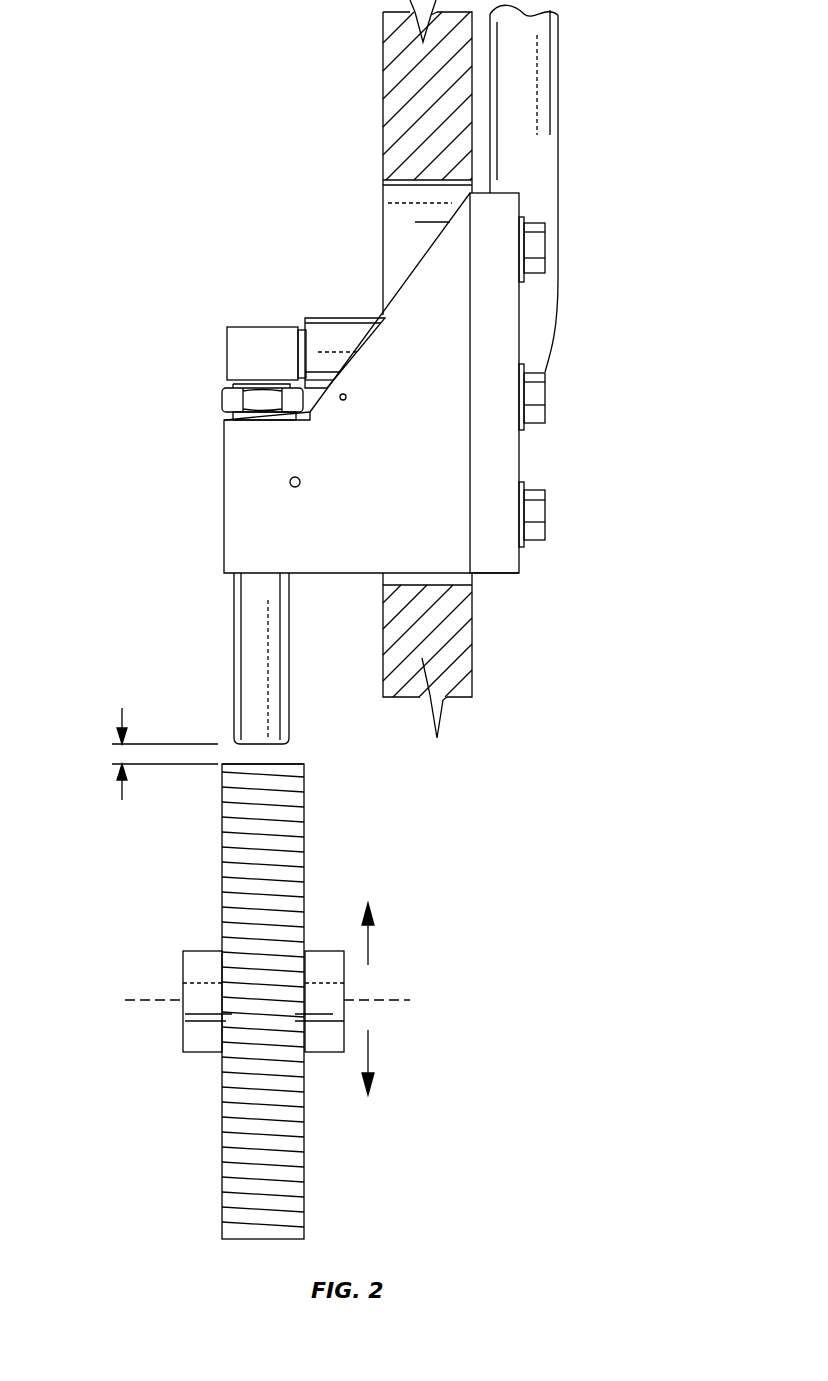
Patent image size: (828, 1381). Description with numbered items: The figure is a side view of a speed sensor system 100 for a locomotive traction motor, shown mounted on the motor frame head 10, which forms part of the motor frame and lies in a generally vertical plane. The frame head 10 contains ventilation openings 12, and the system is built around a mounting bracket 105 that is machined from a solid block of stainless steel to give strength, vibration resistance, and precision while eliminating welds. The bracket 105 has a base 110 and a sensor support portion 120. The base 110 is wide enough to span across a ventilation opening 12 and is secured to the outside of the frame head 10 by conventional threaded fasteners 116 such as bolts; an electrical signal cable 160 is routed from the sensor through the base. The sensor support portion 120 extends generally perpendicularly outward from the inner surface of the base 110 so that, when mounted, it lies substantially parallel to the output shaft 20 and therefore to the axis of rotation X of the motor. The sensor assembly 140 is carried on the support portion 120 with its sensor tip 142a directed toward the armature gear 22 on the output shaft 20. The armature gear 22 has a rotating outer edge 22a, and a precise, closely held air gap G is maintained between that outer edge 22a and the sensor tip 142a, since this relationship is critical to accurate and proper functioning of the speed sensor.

The speed sensor system 100 is at (200, 172).
The motor frame head 10 is at (405, 92).
The ventilation opening 12 is at (405, 222).
The electrical signal cable 160 is at (527, 100).
The base 110 is at (490, 553).
The threaded fasteners 116 is at (541, 490).
The sensor assembly 140 is at (215, 349).
The mounting bracket 105 is at (305, 569).
The sensor support portion 120 is at (327, 548).
The sensor tip 142a is at (240, 742).
The air gap G is at (165, 755).
The armature gear 22 is at (262, 1228).
The rotating outer edge 22a is at (276, 764).
The output shaft 20 is at (206, 1020).
The axis of rotation X is at (268, 999).